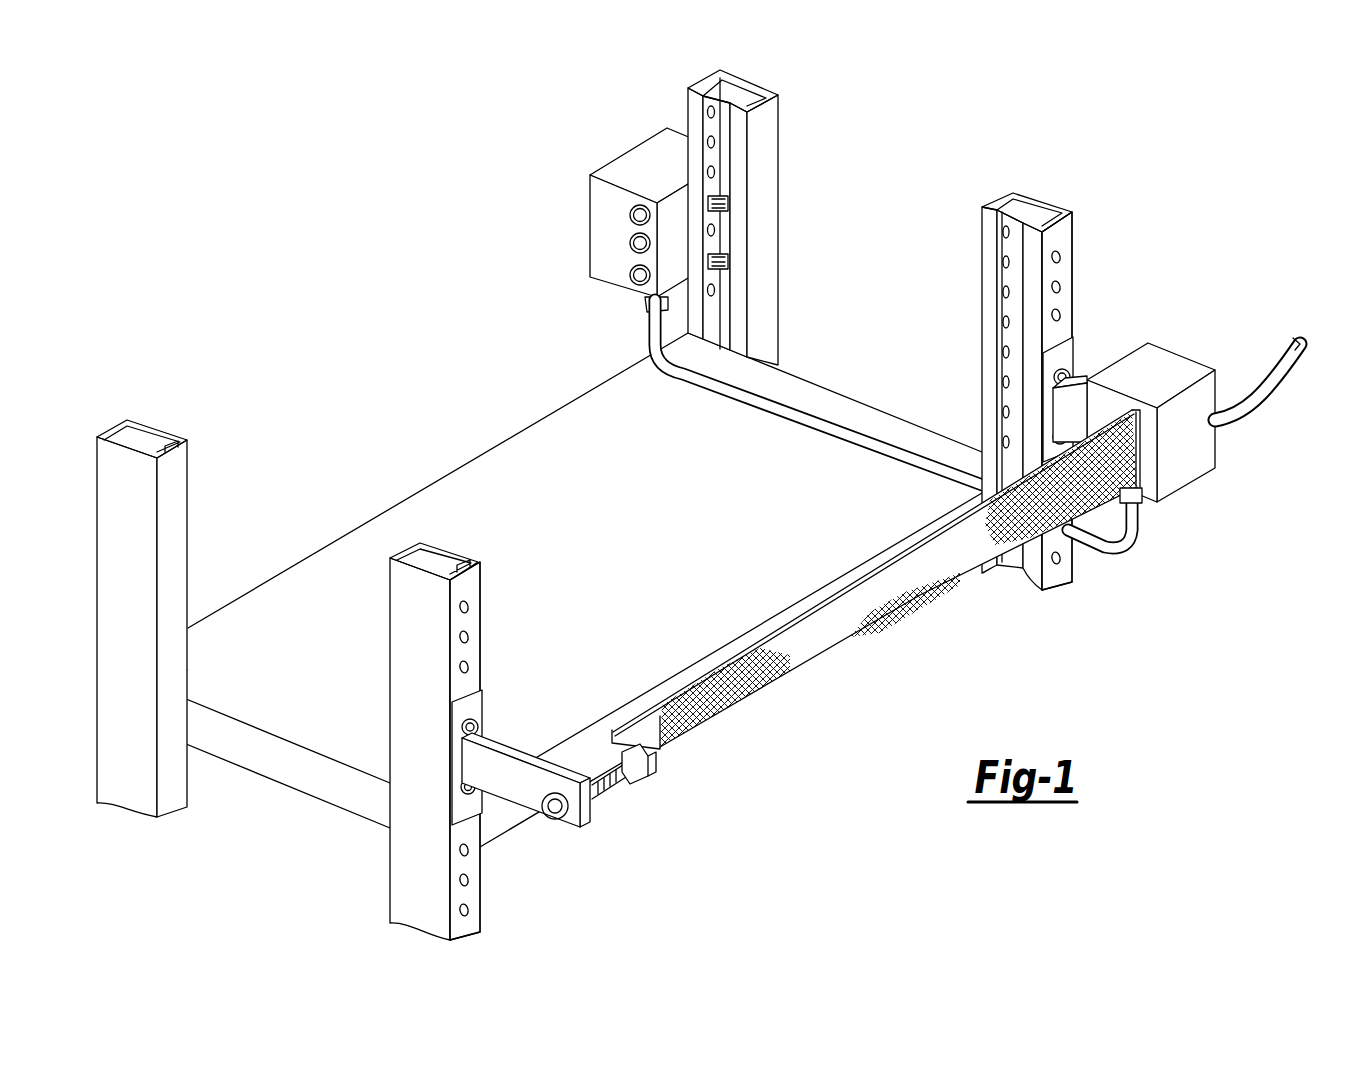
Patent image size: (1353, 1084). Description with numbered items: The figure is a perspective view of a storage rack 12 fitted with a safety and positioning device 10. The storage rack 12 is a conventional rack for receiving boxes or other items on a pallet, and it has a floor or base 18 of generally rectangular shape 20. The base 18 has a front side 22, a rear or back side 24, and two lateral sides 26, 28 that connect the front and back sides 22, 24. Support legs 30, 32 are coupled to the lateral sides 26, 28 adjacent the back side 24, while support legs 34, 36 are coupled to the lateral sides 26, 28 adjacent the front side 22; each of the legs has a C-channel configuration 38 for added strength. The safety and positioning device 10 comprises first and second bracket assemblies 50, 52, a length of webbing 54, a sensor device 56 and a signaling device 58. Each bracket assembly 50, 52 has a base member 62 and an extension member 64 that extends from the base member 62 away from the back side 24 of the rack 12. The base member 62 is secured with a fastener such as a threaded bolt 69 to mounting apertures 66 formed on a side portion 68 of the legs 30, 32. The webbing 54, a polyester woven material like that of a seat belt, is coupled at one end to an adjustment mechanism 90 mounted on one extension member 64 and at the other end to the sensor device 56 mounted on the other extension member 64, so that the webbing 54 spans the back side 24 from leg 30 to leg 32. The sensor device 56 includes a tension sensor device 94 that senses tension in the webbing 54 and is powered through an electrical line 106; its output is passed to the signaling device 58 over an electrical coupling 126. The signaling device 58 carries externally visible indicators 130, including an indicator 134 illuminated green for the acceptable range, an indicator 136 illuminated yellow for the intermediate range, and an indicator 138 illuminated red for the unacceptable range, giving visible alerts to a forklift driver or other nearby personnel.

The safety and positioning device 10 is at (698, 505).
The storage rack 12 is at (617, 505).
The base 18 is at (569, 603).
The generally rectangular shape 20 is at (569, 603).
The front side 22 is at (303, 548).
The back side 24 is at (497, 820).
The lateral side 26 is at (305, 783).
The lateral side 28 is at (858, 395).
The support leg 30 is at (380, 640).
The support leg 32 is at (978, 212).
The support leg 34 is at (200, 495).
The support leg 36 is at (782, 197).
The C-channel configuration 38 is at (135, 420).
The first bracket assembly 50 is at (731, 563).
The second bracket assembly 52 is at (1193, 427).
The webbing 54 is at (822, 656).
The sensor device 56 is at (1193, 434).
The signaling device 58 is at (612, 223).
The base member 62 is at (455, 760).
The extension member 64 is at (462, 770).
The mounting apertures 66 is at (466, 605).
The side portion 68 is at (472, 578).
The threaded bolt 69 is at (472, 723).
The adjustment mechanism 90 is at (615, 788).
The tension sensor device 94 is at (1185, 478).
The electrical line 106 is at (1238, 410).
The electrical coupling 126 is at (792, 412).
The visible indicators 130 is at (624, 235).
The green indicator 134 is at (628, 243).
The yellow indicator 136 is at (628, 276).
The red indicator 138 is at (625, 213).